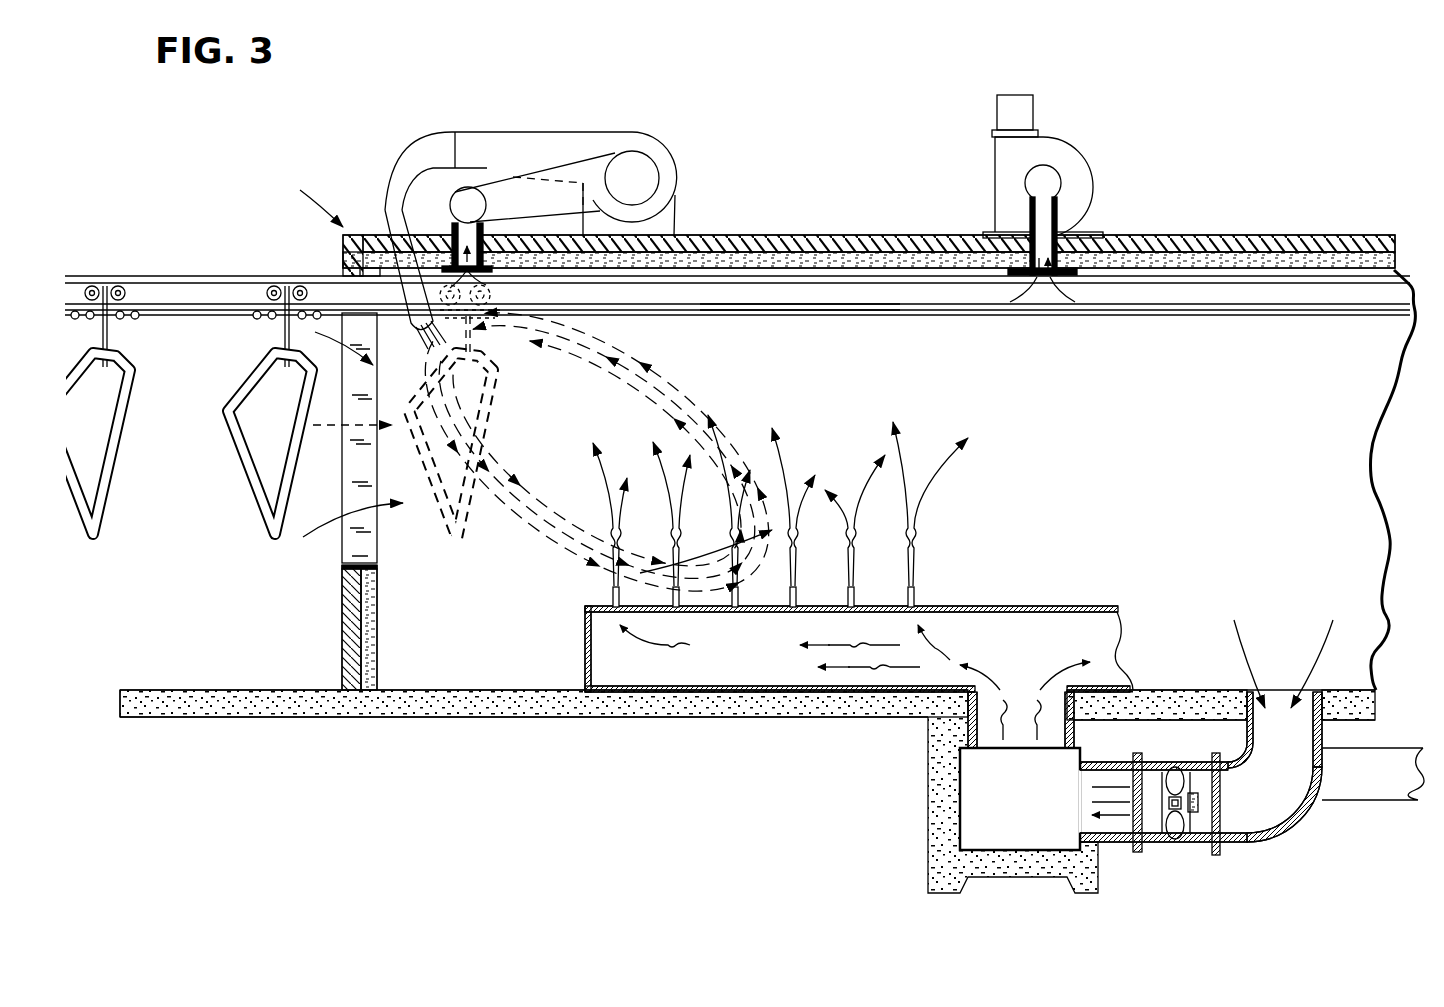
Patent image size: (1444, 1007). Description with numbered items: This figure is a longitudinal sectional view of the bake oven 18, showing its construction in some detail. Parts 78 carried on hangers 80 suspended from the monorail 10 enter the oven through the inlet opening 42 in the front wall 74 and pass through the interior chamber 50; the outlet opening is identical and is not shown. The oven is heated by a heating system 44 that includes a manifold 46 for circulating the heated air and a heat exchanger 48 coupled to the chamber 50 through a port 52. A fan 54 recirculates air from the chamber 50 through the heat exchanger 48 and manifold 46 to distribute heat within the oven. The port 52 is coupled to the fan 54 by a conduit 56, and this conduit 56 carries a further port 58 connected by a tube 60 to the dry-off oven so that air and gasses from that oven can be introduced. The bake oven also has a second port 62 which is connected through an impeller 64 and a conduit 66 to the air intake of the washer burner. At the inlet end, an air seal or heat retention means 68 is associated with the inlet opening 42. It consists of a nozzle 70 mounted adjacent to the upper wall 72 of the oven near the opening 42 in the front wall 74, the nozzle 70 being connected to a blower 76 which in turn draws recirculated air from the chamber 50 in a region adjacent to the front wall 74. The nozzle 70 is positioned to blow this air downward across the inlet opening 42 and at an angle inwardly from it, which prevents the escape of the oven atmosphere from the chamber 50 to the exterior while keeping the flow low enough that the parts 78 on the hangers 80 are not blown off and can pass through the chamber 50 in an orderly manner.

The monorail 10 is at (220, 275).
The bake oven 18 is at (1270, 237).
The inlet opening 42 is at (342, 550).
The heating system 44 is at (1048, 607).
The manifold 46 is at (1088, 645).
The heat exchanger 48 is at (1010, 840).
The interior chamber 50 is at (1163, 447).
The port 52 is at (1308, 692).
The fan 54 is at (1177, 835).
The conduit 56 is at (1285, 828).
The port 58 is at (1314, 777).
The tube 60 is at (1385, 760).
The second port 62 is at (1043, 282).
The impeller 64 is at (1093, 178).
The conduit 66 is at (1000, 113).
The air seal 68 is at (447, 131).
The nozzle 70 is at (418, 322).
The upper wall 72 is at (787, 268).
The front wall 74 is at (378, 640).
The blower 76 is at (660, 138).
The parts 78 is at (250, 513).
The hangers 80 is at (108, 336).